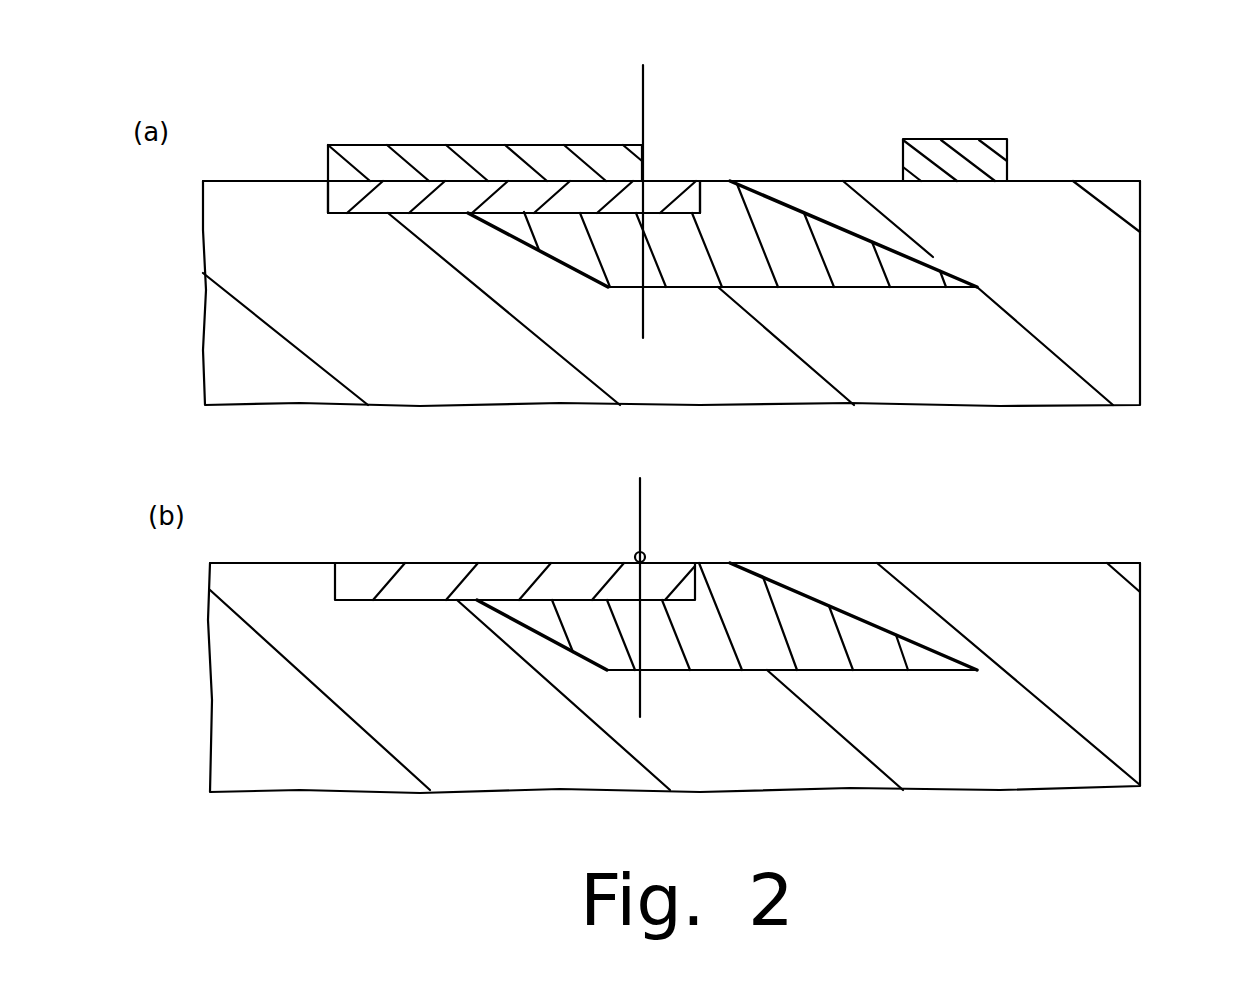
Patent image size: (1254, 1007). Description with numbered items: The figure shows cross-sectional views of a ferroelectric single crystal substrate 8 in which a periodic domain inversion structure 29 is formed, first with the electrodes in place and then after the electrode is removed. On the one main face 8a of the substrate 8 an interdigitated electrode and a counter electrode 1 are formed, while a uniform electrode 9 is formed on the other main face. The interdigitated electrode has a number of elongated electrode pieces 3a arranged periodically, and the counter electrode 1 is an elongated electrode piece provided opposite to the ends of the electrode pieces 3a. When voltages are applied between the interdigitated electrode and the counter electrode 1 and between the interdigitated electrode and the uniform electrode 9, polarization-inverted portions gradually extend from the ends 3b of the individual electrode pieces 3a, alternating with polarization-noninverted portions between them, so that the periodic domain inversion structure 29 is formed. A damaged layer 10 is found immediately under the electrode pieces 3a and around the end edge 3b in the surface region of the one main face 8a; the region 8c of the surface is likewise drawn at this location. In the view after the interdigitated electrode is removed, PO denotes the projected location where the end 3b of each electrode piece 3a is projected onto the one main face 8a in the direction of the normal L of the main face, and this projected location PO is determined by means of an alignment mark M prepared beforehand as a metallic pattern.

The ferroelectric single crystal substrate 8 is at (1140, 263).
The one main face 8a is at (1107, 181).
The recess in substrate surface 8c is at (423, 178).
The electrode pieces 3a is at (530, 155).
The ends of the electrode pieces 3b is at (643, 160).
The uniform electrode 9 is at (793, 237).
The periodic domain inversion structure 29 is at (864, 226).
The damaged layer 10 is at (522, 198).
The counter electrode 1 is at (1007, 151).
The normal of the main face L is at (643, 103).
The projected location of the end edge PO is at (643, 181).
The alignment mark M is at (635, 554).